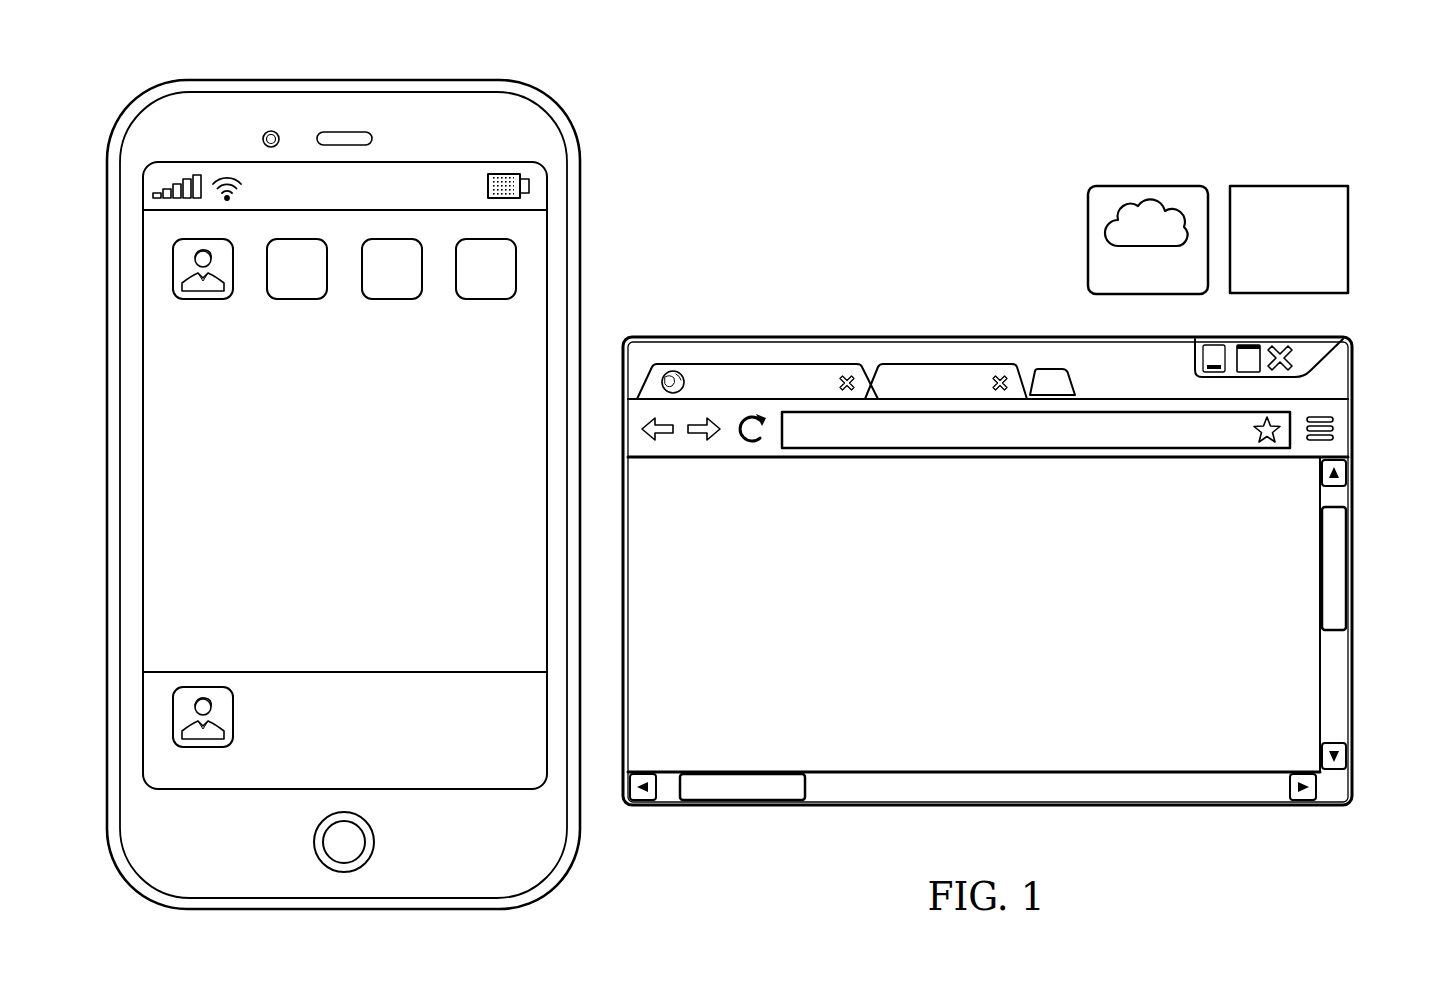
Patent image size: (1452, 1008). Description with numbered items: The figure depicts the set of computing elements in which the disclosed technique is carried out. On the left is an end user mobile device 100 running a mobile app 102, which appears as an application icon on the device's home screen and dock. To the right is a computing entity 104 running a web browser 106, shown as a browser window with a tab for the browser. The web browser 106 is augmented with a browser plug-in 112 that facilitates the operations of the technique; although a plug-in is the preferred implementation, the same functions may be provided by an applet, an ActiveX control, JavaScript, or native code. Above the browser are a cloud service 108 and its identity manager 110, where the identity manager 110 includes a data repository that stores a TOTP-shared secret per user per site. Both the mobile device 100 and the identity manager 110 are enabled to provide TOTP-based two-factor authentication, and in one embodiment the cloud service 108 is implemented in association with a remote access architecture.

The end user mobile device 100 is at (343, 459).
The mobile app 102 is at (234, 717).
The computing entity 104 is at (987, 537).
The web browser 106 is at (758, 363).
The cloud service 108 is at (1088, 240).
The identity manager 110 is at (1350, 240).
The browser plug-in 112 is at (1092, 379).